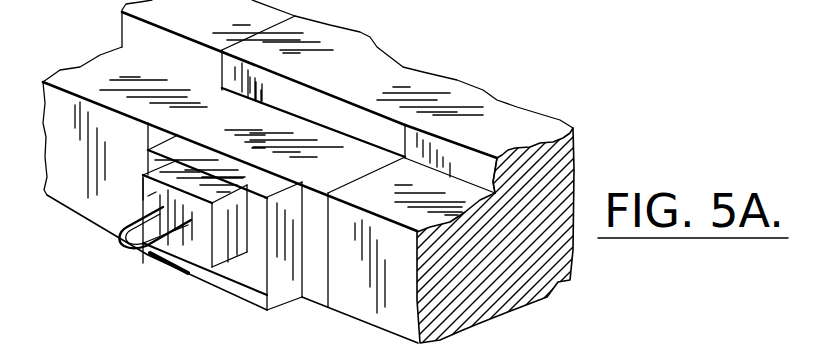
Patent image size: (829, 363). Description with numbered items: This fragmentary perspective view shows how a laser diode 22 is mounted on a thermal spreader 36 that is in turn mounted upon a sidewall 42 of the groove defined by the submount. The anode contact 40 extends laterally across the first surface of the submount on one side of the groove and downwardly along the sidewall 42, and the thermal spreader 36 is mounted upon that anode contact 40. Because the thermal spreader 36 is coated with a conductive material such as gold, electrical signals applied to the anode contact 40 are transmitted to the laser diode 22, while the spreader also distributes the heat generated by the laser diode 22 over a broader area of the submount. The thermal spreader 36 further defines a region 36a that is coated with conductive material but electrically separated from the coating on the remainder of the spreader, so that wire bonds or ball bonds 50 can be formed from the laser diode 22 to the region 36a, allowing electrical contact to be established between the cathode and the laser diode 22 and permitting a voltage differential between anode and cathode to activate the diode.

The laser diode 22 is at (153, 192).
The thermal spreader 36 is at (185, 152).
The region 36a is at (247, 297).
The anode contact 40 is at (290, 163).
The sidewall 42 is at (348, 295).
The wire bonds or ball bonds 50 is at (127, 233).